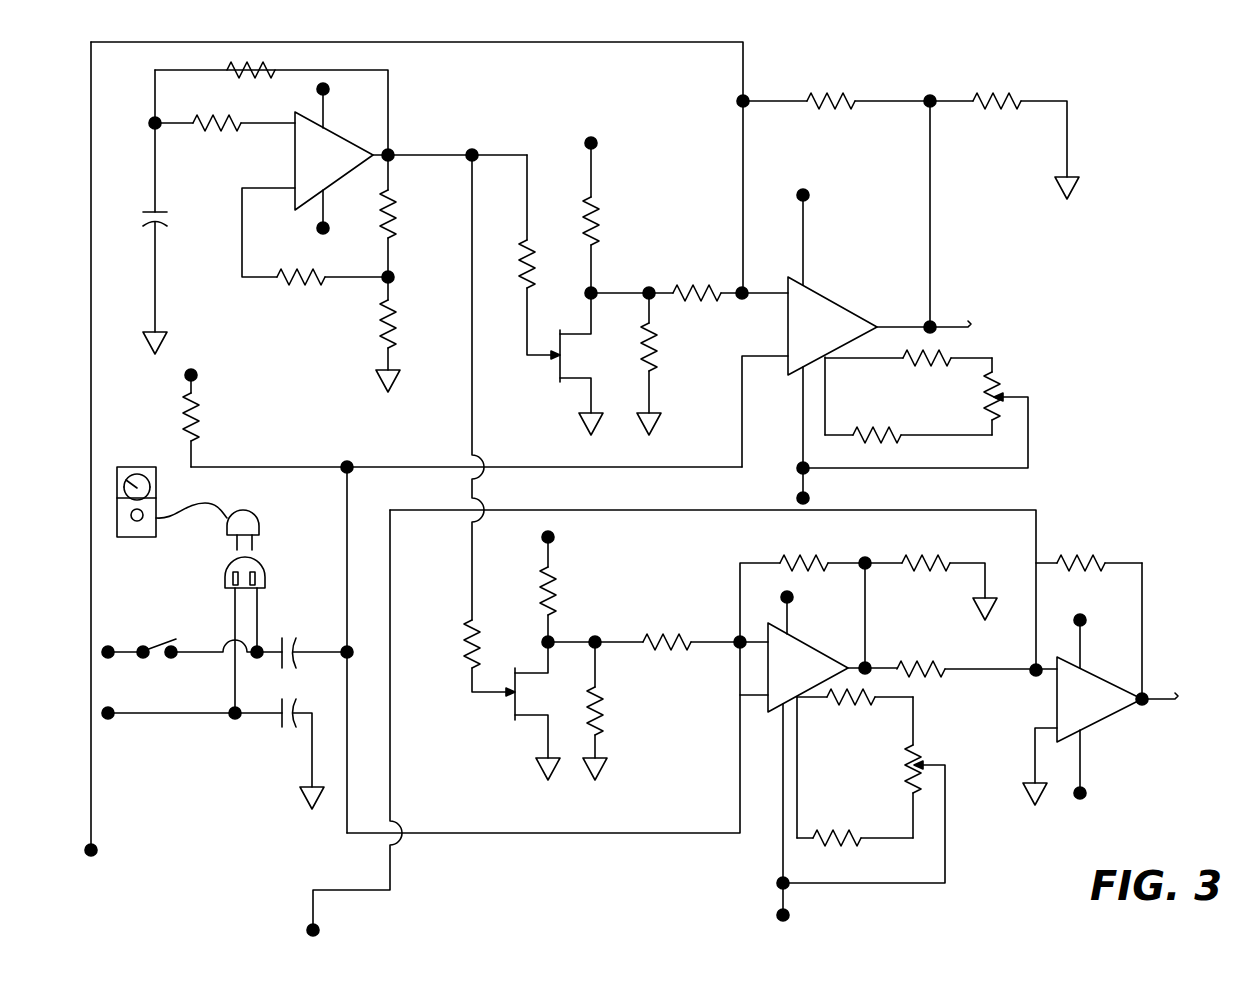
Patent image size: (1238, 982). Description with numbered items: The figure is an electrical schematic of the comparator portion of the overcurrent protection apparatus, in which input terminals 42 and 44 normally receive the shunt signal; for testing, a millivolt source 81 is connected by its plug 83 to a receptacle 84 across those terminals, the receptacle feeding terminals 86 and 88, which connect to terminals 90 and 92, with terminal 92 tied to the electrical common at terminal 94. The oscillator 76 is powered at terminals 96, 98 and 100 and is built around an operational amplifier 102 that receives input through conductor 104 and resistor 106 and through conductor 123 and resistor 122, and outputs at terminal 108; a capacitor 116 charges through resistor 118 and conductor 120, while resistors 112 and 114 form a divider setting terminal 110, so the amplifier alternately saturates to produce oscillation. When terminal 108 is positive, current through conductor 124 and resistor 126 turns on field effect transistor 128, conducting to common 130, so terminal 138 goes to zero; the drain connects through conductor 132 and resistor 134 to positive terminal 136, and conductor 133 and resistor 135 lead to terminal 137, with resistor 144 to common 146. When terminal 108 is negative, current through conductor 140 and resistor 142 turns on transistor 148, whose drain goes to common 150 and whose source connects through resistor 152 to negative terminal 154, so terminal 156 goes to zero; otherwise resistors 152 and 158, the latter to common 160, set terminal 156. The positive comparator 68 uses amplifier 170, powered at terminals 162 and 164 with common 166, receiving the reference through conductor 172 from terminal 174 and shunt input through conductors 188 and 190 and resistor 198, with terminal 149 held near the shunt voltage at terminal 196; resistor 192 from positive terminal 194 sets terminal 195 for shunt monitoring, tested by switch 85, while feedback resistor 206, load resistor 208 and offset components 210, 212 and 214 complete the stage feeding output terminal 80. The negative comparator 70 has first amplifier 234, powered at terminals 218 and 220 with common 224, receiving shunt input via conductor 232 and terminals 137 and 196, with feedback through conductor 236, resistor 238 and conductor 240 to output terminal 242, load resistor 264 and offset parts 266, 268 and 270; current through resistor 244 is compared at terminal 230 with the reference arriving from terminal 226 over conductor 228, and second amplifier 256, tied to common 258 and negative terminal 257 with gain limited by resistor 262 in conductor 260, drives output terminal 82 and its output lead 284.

The input terminal 42 is at (112, 648).
The input terminal 44 is at (110, 718).
The positive comparator 68 is at (797, 268).
The negative comparator 70 is at (697, 603).
The oscillator 76 is at (398, 150).
The output terminal 80 is at (928, 322).
The millivolt source 81 is at (148, 465).
The output terminal 82 is at (1148, 703).
The plug 83 is at (222, 528).
The receptacle 84 is at (264, 562).
The switch 85 is at (155, 648).
The terminal 86 is at (283, 640).
The terminal 88 is at (283, 700).
The terminal 90 is at (292, 667).
The terminal 92 is at (293, 725).
The electrical common terminal 94 is at (300, 790).
The positive voltage terminal 96 is at (316, 89).
The negative voltage terminal 98 is at (328, 226).
The electrical common 100 is at (160, 335).
The operational amplifier 102 is at (293, 162).
The conductor 104 is at (180, 126).
The resistor 106 is at (225, 120).
The output terminal 108 is at (475, 152).
The terminal 110 is at (393, 276).
The resistor 112 is at (392, 210).
The resistor 114 is at (393, 332).
The capacitor 116 is at (152, 208).
The resistor 118 is at (230, 68).
The conductor 120 is at (372, 68).
The resistor 122 is at (305, 280).
The conductor 123 is at (240, 218).
The conductor 124 is at (468, 345).
The resistor 126 is at (462, 650).
The field effect transistor 128 is at (508, 716).
The electrical common 130 is at (545, 760).
The conductor 132 is at (543, 650).
The conductor 133 is at (601, 650).
The resistor 134 is at (547, 580).
The resistor 135 is at (668, 635).
The positive voltage terminal 136 is at (578, 532).
The terminal 137 is at (735, 647).
The terminal 138 is at (597, 640).
The conductor 140 is at (528, 212).
The resistor 142 is at (530, 275).
The resistor 144 is at (602, 700).
The electrical common 146 is at (605, 762).
The field effect transistor 148 is at (556, 368).
The terminal 149 is at (748, 288).
The electrical common 150 is at (585, 420).
The resistor 152 is at (598, 210).
The negative voltage terminal 154 is at (636, 128).
The terminal 156 is at (651, 285).
The resistor 158 is at (655, 355).
The electrical common 160 is at (658, 420).
The positive voltage terminal 162 is at (832, 183).
The negative voltage terminal 164 is at (840, 490).
The electrical common 166 is at (1072, 175).
The operational amplifier 170 is at (786, 321).
The conductor 172 is at (645, 42).
The terminal 174 is at (97, 848).
The conductor 188 is at (650, 470).
The conductor 190 is at (343, 497).
The resistor 192 is at (198, 425).
The positive voltage terminal 194 is at (215, 355).
The terminal 195 is at (348, 462).
The shunt terminal 196 is at (350, 648).
The resistor 198 is at (702, 285).
The feedback resistor 206 is at (835, 98).
The resistor 208 is at (1000, 98).
The resistor 210 is at (927, 355).
The resistor 212 is at (882, 430).
The potentiometer 214 is at (995, 367).
The positive voltage terminal 218 is at (812, 590).
The negative voltage terminal 220 is at (840, 910).
The electrical common 224 is at (980, 622).
The terminal 226 is at (308, 928).
The conductor 228 is at (742, 508).
The terminal 230 is at (1032, 664).
The conductor 232 is at (608, 835).
The first operational amplifier 234 is at (767, 655).
The conductor 236 is at (740, 562).
The resistor 238 is at (800, 560).
The conductor 240 is at (868, 592).
The output terminal 242 is at (870, 665).
The resistor 244 is at (920, 672).
The second operational amplifier 256 is at (1057, 689).
The negative voltage terminal 257 is at (1122, 805).
The electrical common 258 is at (1010, 825).
The conductor 260 is at (1146, 592).
The resistor 262 is at (1080, 562).
The resistor 264 is at (933, 562).
The resistor 266 is at (845, 705).
The resistor 268 is at (848, 836).
The potentiometer 270 is at (908, 768).
The output lead 284 is at (1165, 690).